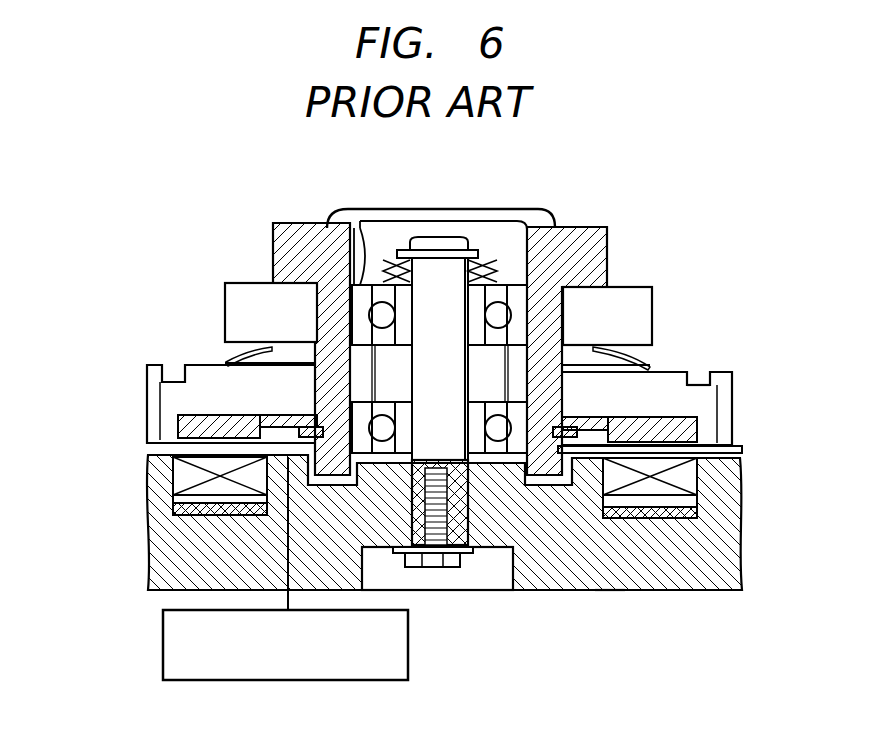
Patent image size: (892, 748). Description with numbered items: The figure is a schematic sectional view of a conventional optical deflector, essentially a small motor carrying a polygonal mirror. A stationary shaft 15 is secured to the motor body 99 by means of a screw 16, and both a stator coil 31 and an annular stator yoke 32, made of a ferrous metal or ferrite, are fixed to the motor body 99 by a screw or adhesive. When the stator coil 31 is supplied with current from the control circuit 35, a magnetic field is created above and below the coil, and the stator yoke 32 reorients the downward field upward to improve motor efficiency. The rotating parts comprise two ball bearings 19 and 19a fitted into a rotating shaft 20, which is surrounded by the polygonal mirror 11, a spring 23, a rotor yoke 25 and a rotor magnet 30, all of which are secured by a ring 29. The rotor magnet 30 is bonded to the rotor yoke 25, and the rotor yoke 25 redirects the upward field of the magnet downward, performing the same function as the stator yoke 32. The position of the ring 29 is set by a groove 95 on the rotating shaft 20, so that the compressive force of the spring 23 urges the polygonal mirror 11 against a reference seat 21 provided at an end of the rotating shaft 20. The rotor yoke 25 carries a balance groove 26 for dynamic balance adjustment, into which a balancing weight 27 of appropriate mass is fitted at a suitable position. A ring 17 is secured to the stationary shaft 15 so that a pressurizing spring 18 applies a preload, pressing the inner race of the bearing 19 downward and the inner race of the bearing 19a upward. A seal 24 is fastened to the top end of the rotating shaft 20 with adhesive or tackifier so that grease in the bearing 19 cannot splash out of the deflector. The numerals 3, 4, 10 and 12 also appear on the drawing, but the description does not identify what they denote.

The base 3 is at (637, 523).
The coil 4 is at (175, 463).
The motor 10 is at (551, 207).
The polygonal mirror 11 is at (641, 287).
The circuit board 12 is at (736, 450).
The stationary shaft 15 is at (497, 548).
The screw 16 is at (458, 572).
The ring 17 is at (478, 250).
The pressurizing spring 18 is at (489, 262).
The ball bearing 19 is at (360, 285).
The ball bearing 19a is at (353, 406).
The rotating shaft 20 is at (260, 230).
The reference seat 21 is at (596, 292).
The spring 23 is at (644, 354).
The seal 24 is at (432, 208).
The rotor yoke 25 is at (740, 377).
The balance groove 26 is at (172, 365).
The balancing weight 27 is at (705, 373).
The ring 29 is at (575, 450).
The rotor magnet 30 is at (690, 432).
The stator coil 31 is at (649, 520).
The stator yoke 32 is at (677, 520).
The control circuit 35 is at (410, 626).
The groove 95 is at (560, 447).
The motor body 99 is at (609, 598).